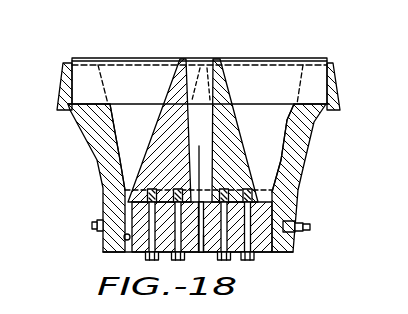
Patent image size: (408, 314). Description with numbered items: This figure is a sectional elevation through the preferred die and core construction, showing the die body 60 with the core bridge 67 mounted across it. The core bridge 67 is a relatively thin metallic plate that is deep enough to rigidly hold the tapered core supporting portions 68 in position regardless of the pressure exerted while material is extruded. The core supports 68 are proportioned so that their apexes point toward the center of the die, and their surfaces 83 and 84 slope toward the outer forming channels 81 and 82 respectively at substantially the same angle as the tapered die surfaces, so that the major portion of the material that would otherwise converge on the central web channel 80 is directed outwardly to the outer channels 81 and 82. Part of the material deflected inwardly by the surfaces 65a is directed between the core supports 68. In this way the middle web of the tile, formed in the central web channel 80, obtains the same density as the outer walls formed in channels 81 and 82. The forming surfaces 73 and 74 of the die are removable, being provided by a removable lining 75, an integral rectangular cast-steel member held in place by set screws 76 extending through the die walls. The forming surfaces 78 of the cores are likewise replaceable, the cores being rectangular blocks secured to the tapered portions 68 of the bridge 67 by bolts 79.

The nozzle body 60 is at (98, 136).
The core bridge 67 is at (112, 72).
The tapered core supporting portions 68 is at (173, 88).
The surface 83 is at (163, 108).
The surface 84 is at (239, 121).
The surfaces 65a is at (114, 124).
The central web channel 80 is at (200, 189).
The forming channel 81 is at (133, 163).
The forming channel 82 is at (276, 148).
The forming surfaces of the cores 78 is at (295, 212).
The set screws 76 is at (311, 224).
The removable lining 75 is at (103, 212).
The forming surface 74 is at (103, 247).
The bolts 79 is at (253, 237).
The forming surface 73 is at (196, 242).